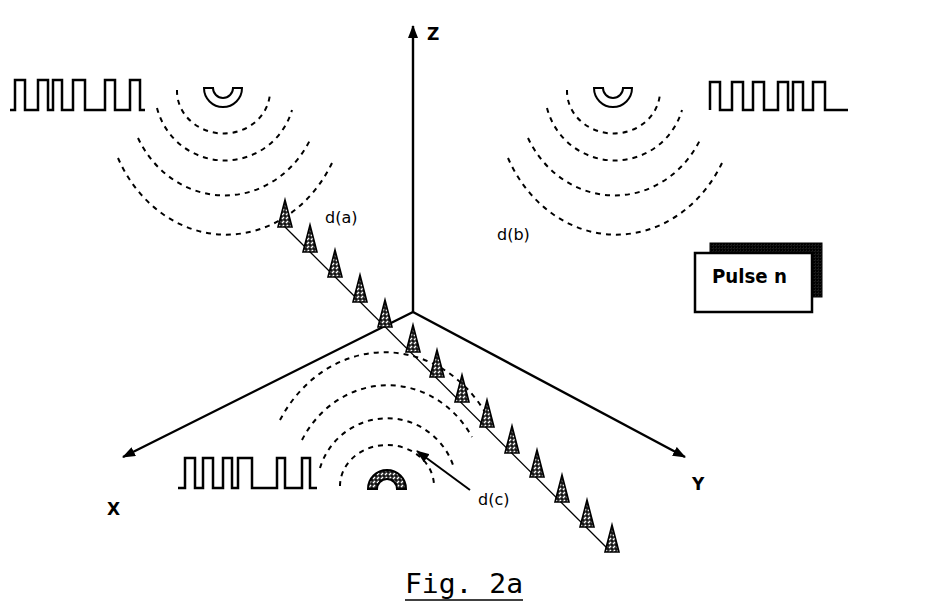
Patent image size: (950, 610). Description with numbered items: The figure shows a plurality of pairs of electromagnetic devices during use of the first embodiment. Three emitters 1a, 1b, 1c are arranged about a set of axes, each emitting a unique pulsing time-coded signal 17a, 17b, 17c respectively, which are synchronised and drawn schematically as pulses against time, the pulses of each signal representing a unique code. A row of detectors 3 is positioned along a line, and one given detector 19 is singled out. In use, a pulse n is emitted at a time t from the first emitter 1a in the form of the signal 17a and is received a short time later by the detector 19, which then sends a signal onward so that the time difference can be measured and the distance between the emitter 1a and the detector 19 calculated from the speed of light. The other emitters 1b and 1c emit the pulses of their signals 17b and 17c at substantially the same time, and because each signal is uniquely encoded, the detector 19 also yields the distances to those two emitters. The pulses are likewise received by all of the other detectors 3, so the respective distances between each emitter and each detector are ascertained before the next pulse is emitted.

The first emitter 1a is at (213, 58).
The emitter 1b is at (616, 56).
The emitter 1c is at (375, 505).
The pulsing time-coded signal 17a is at (74, 131).
The pulsing time-coded signal 17b is at (806, 131).
The pulsing time-coded signal 17c is at (252, 505).
The detector 19 is at (525, 376).
The detectors 3 is at (658, 533).